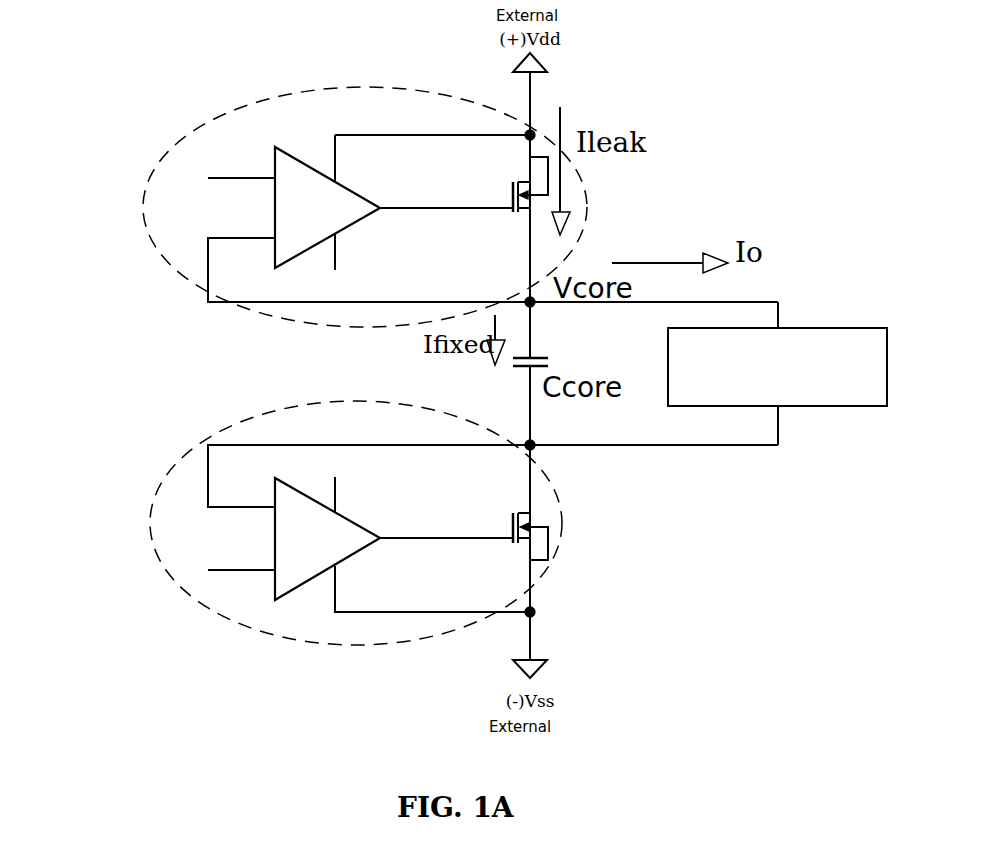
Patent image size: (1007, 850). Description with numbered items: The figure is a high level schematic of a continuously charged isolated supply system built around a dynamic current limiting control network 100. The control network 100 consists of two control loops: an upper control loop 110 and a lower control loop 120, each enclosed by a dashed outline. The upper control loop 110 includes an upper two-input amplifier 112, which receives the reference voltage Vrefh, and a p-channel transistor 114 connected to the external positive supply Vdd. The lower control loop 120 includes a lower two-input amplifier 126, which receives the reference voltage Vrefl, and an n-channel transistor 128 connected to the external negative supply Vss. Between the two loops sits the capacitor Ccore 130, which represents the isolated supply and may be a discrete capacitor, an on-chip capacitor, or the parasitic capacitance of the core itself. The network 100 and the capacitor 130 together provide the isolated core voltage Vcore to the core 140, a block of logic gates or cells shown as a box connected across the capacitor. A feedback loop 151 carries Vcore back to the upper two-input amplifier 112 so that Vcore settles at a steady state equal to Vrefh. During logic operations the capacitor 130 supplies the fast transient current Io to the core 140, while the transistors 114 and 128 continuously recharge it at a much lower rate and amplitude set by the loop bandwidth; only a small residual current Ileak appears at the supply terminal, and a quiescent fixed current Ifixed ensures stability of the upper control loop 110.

The control network 100 is at (153, 533).
The upper control loop 110 is at (212, 121).
The upper two-input amplifier 112 is at (293, 218).
The p-channel transistor 114 is at (512, 183).
The lower control loop 120 is at (207, 444).
The lower two-input amplifier 126 is at (293, 548).
The n-channel transistor 128 is at (513, 513).
The capacitor Ccore 130 is at (546, 356).
The core 140 is at (764, 385).
The feedback loop 151 is at (466, 300).